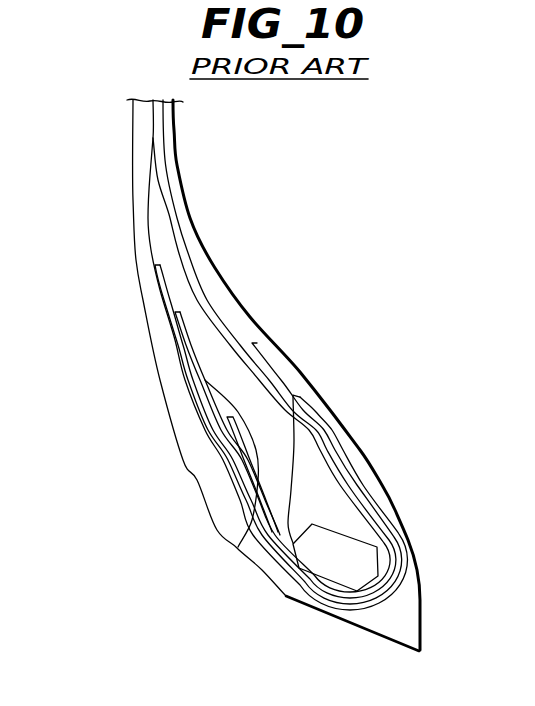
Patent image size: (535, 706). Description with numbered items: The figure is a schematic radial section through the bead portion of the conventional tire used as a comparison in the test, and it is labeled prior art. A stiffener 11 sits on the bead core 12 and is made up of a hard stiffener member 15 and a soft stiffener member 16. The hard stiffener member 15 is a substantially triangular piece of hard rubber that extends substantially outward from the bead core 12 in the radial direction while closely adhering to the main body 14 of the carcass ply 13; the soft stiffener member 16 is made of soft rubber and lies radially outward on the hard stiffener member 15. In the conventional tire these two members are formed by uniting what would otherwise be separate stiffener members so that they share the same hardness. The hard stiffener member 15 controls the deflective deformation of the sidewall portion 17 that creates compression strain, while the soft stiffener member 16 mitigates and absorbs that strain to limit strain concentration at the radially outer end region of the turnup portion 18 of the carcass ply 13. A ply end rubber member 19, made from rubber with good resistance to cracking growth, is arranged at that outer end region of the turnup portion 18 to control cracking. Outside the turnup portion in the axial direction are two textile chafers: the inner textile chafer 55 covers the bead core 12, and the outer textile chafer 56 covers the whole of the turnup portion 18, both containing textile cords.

The stiffener 11 is at (207, 345).
The bead core 12 is at (357, 563).
The carcass ply 13 is at (193, 262).
The main body 14 is at (333, 465).
The hard stiffener member 15 is at (334, 517).
The soft stiffener member 16 is at (260, 397).
The sidewall portion 17 is at (127, 155).
The turnup portion 18 is at (243, 503).
The ply end rubber member 19 is at (222, 402).
The inner textile chafer 55 is at (305, 603).
The outer textile chafer 56 is at (253, 535).